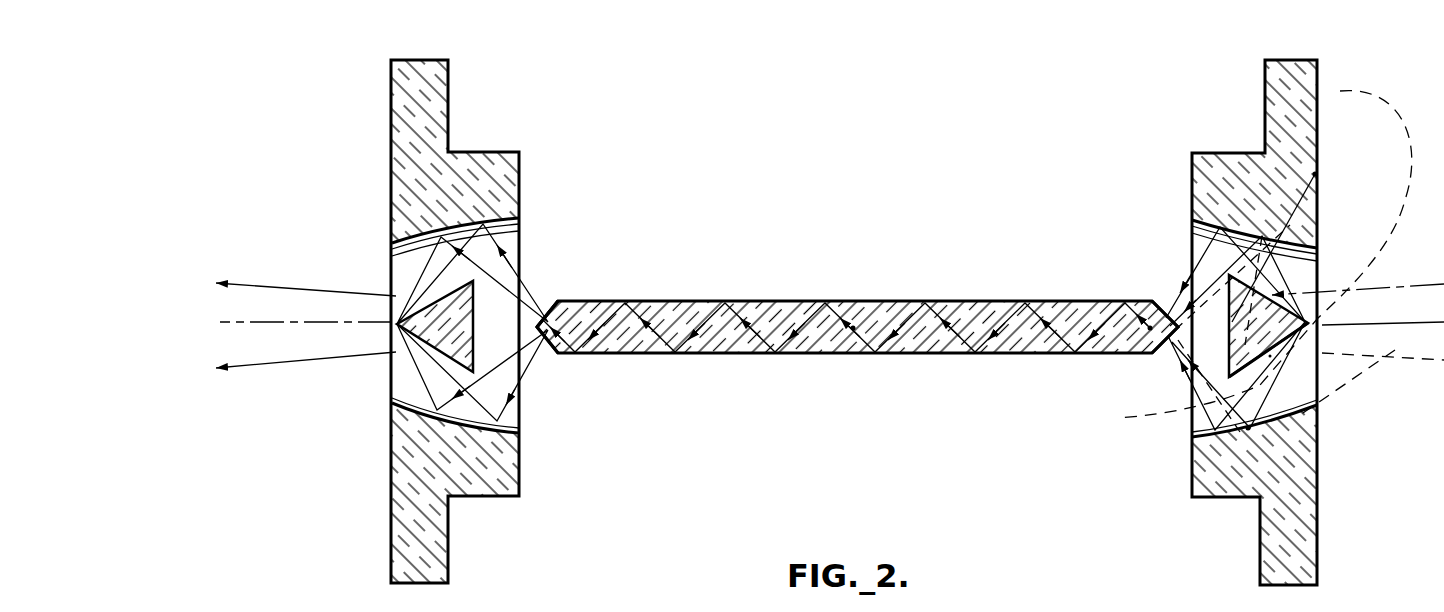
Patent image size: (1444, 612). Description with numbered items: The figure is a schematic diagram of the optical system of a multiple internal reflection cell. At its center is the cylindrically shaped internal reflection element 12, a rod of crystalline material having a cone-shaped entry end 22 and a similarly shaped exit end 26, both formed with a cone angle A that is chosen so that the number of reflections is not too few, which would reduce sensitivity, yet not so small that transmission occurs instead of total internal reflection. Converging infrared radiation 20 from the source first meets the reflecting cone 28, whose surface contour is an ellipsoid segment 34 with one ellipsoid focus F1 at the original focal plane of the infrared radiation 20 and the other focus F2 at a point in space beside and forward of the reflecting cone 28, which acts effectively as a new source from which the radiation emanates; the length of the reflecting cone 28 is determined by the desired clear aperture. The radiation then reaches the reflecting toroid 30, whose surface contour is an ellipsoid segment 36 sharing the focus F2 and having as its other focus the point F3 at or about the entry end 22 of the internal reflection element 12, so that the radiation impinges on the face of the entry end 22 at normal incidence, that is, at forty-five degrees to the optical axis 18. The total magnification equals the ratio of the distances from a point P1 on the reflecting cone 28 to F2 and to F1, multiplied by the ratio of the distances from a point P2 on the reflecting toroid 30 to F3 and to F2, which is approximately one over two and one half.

The cylindrically shaped internal reflection element 12 is at (960, 302).
The optical axis 18 is at (250, 322).
The infrared radiation 20 is at (1393, 356).
The entry end 22 is at (1165, 306).
The exit end 26 is at (558, 355).
The reflecting cone 28 is at (1280, 322).
The reflecting toroid 30 is at (1295, 443).
The ellipsoid segment 34 is at (1255, 358).
The ellipsoid segment 36 is at (1193, 431).
The cone angle A is at (548, 306).
The ellipsoid focus F1 is at (853, 326).
The ellipsoid focus F2 is at (1291, 241).
The ellipsoid focus F3 is at (1136, 340).
The point on reflecting cone P1 is at (1270, 356).
The point on reflecting toroid P2 is at (1261, 452).